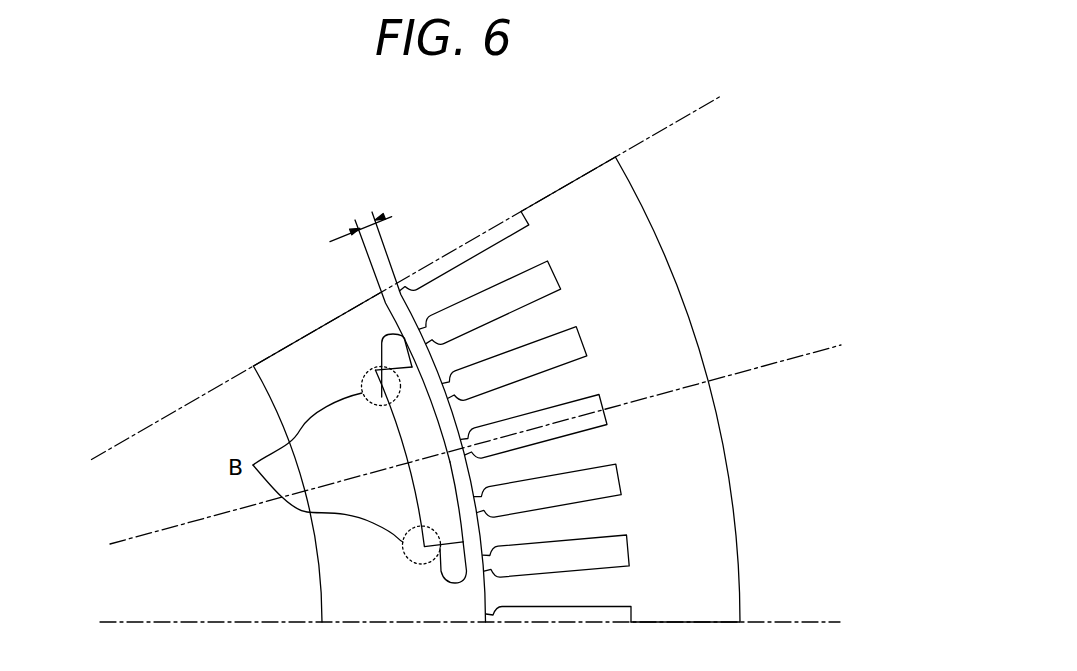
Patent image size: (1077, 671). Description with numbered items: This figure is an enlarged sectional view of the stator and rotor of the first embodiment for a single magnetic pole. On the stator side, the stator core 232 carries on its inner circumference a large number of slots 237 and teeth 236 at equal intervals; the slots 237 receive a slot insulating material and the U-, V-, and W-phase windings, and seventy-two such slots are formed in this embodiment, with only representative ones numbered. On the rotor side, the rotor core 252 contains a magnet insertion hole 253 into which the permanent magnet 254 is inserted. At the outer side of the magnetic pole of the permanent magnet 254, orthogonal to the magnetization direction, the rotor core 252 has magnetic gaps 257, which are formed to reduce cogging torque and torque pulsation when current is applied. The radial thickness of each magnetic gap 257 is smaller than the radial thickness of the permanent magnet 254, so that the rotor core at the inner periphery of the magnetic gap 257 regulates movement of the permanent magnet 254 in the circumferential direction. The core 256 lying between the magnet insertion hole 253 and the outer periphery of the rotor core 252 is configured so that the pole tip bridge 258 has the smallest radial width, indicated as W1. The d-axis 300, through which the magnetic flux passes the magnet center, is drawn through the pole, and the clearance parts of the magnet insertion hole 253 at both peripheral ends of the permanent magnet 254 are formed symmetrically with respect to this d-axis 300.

The stator core 232 is at (654, 243).
The tooth 236 is at (540, 325).
The slot 237 is at (547, 280).
The rotor core 252 is at (270, 361).
The magnet insertion hole 253 is at (447, 493).
The permanent magnet 254 is at (399, 432).
The core 256 is at (443, 425).
The magnetic gap 257 is at (393, 353).
The pole tip bridge 258 is at (416, 343).
The d-axis 300 is at (804, 348).